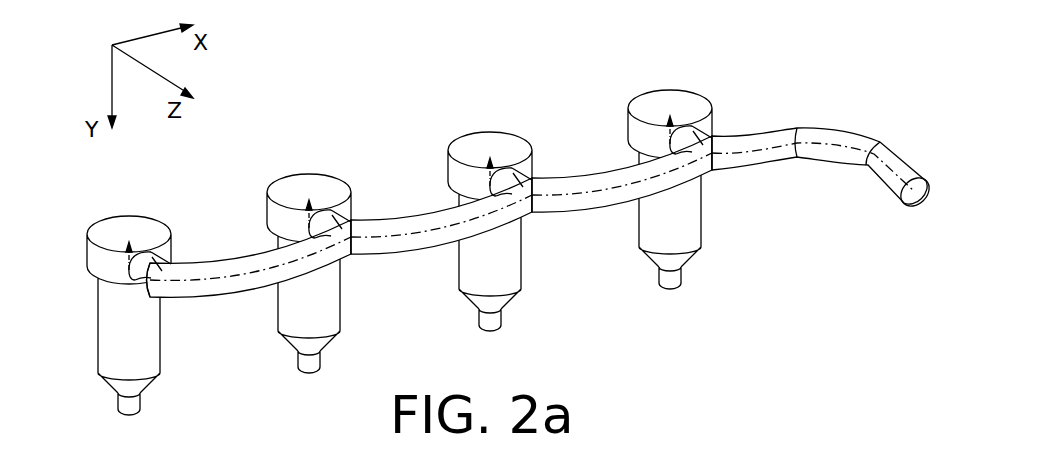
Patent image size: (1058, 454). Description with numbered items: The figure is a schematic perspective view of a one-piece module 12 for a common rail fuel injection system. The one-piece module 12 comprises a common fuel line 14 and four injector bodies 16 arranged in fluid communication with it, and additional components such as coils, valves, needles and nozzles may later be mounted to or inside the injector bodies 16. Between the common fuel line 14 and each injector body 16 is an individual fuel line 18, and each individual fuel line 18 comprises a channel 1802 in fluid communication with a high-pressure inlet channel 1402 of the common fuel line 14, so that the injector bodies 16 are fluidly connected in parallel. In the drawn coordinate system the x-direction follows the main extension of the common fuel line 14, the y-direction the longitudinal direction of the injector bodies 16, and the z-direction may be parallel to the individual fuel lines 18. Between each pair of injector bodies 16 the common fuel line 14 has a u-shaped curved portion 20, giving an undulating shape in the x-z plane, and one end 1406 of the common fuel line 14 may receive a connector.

The one-piece module 12 is at (891, 102).
The common fuel line 14 is at (872, 172).
The injector bodies 16 is at (120, 378).
The individual fuel lines 18 is at (183, 263).
The curved portion 20 is at (248, 283).
The high-pressure inlet channel 1402 is at (213, 260).
The end of the common fuel line 1406 is at (912, 210).
The channel 1802 is at (170, 252).